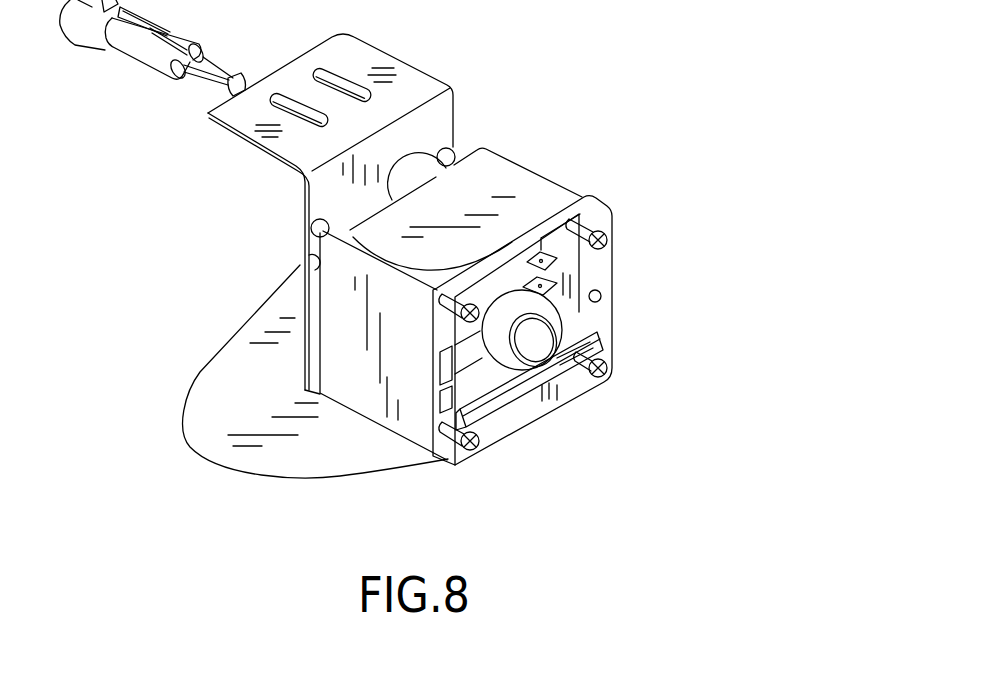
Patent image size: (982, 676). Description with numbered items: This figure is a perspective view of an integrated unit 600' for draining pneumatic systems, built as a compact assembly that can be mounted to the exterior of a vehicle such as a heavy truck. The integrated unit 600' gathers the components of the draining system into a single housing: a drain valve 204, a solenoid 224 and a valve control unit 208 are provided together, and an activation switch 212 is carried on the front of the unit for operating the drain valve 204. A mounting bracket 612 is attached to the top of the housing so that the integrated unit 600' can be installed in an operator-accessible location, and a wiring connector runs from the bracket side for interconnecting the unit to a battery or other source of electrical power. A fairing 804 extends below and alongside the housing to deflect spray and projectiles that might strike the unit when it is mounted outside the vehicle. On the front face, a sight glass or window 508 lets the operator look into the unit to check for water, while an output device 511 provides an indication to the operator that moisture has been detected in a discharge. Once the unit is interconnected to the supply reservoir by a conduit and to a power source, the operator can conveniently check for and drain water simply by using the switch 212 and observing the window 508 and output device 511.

The mounting bracket 612 is at (413, 69).
The drain valve 204 is at (462, 153).
The valve control unit 208 is at (452, 305).
The solenoid 224 is at (452, 305).
The fairing 804 is at (202, 369).
The integrated unit 600' is at (569, 357).
The output device 511 is at (604, 296).
The activation switch 212 is at (540, 347).
The sight glass or window 508 is at (488, 417).